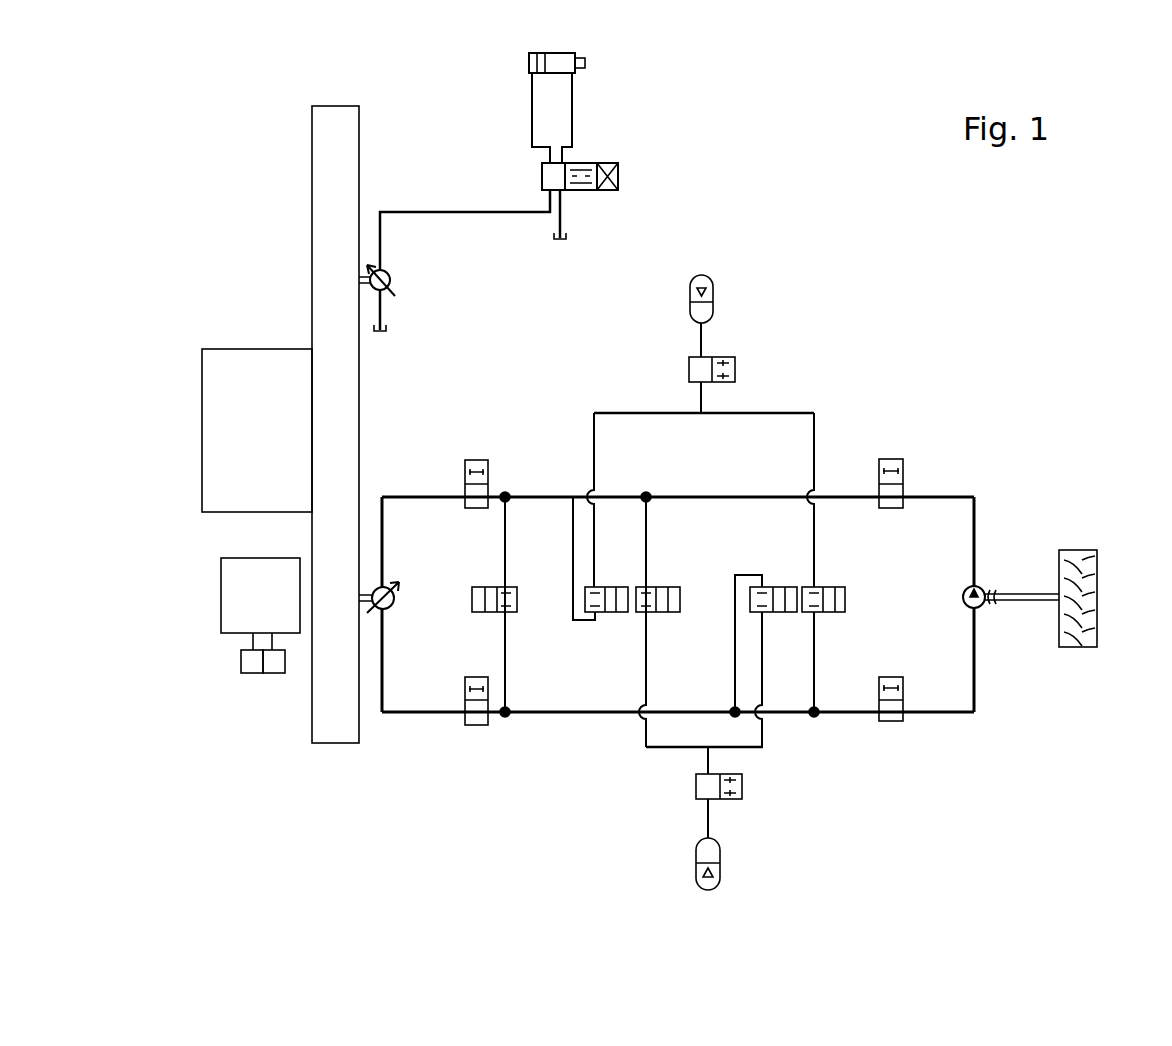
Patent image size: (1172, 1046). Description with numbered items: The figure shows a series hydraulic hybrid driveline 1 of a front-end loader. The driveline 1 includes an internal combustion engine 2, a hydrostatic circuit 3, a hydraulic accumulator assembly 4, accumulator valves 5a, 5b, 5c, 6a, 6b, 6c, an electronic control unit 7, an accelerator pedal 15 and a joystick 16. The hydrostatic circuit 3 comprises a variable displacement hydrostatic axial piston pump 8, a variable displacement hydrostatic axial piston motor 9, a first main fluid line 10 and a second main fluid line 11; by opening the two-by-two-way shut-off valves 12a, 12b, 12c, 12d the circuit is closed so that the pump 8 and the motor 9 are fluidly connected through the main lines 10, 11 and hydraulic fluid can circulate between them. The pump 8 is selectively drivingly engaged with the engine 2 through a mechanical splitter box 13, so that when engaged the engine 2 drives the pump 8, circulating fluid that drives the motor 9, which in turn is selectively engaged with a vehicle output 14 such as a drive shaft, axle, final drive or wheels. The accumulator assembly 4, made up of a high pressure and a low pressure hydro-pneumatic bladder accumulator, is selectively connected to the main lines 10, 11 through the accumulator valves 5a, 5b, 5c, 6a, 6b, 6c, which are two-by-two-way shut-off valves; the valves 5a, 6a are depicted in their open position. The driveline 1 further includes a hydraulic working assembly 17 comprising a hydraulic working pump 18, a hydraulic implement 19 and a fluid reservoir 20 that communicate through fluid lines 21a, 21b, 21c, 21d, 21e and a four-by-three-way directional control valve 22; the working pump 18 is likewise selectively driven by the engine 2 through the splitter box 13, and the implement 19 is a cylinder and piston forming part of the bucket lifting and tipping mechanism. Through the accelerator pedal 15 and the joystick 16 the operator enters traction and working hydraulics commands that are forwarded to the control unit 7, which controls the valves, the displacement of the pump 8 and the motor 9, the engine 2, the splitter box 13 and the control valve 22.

The series hydraulic hybrid driveline 1 is at (909, 308).
The internal combustion engine 2 is at (203, 423).
The hydrostatic circuit 3 is at (849, 778).
The hydraulic accumulator assembly 4 is at (758, 262).
The accumulator valve 5a is at (737, 370).
The accumulator valve 5b is at (627, 614).
The accumulator valve 5c is at (838, 613).
The accumulator valve 6a is at (742, 789).
The accumulator valve 6b is at (662, 582).
The accumulator valve 6c is at (786, 585).
The electronic control unit 7 is at (219, 598).
The variable displacement hydrostatic axial piston pump 8 is at (389, 608).
The variable displacement hydrostatic axial piston motor 9 is at (964, 603).
The first main fluid line 10 is at (528, 497).
The second main fluid line 11 is at (582, 714).
The 2/2-way shut-off valve 12a is at (476, 460).
The 2/2-way shut-off valve 12b is at (476, 727).
The 2/2-way shut-off valve 12c is at (891, 458).
The 2/2-way shut-off valve 12d is at (895, 723).
The mechanical splitter box 13 is at (313, 181).
The vehicle output 14 is at (1077, 548).
The accelerator pedal 15 is at (248, 675).
The joystick 16 is at (271, 675).
The hydraulic working assembly 17 is at (429, 99).
The hydraulic working pump 18 is at (397, 281).
The hydraulic implement 19 is at (609, 59).
The fluid reservoir 20 is at (385, 335).
The fluid line 21a is at (394, 312).
The fluid line 21b is at (412, 212).
The fluid line 21c is at (528, 88).
The fluid line 21d is at (577, 126).
The fluid line 21e is at (568, 228).
The 4/3-way directional control valve 22 is at (632, 168).